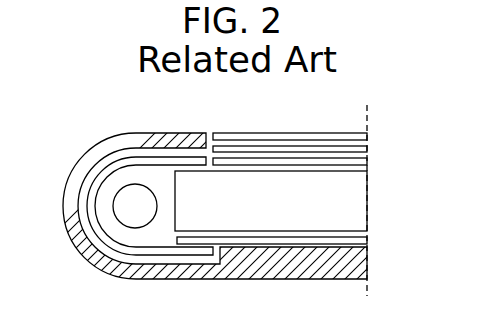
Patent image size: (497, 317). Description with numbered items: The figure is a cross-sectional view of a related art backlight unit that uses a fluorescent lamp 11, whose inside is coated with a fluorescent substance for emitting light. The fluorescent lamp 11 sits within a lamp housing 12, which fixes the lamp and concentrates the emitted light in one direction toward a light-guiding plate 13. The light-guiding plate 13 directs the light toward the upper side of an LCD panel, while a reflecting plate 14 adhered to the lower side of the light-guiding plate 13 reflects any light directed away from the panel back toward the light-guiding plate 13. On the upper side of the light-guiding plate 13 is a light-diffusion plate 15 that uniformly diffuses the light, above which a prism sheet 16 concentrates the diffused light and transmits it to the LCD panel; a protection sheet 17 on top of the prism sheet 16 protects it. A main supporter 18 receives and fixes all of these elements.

The fluorescent lamp 11 is at (128, 193).
The lamp housing 12 is at (90, 200).
The light-guiding plate 13 is at (368, 200).
The reflecting plate 14 is at (368, 240).
The light-diffusion plate 15 is at (368, 163).
The prism sheet 16 is at (368, 147).
The protection sheet 17 is at (285, 132).
The main supporter 18 is at (368, 263).